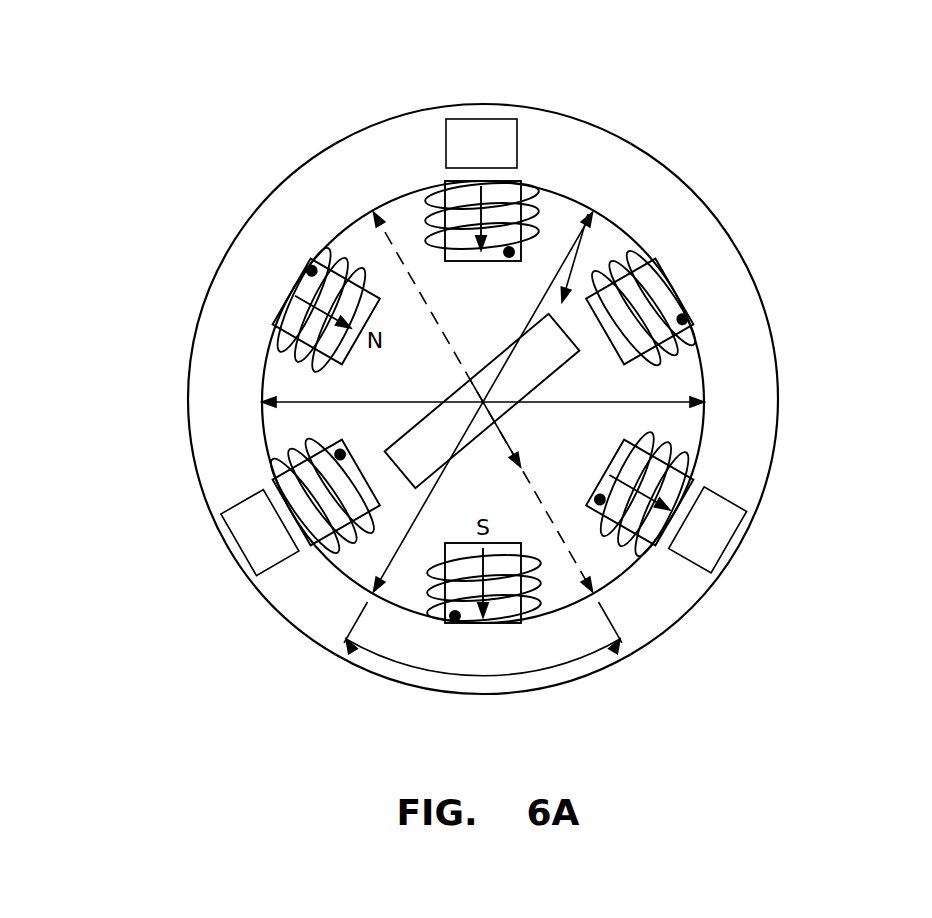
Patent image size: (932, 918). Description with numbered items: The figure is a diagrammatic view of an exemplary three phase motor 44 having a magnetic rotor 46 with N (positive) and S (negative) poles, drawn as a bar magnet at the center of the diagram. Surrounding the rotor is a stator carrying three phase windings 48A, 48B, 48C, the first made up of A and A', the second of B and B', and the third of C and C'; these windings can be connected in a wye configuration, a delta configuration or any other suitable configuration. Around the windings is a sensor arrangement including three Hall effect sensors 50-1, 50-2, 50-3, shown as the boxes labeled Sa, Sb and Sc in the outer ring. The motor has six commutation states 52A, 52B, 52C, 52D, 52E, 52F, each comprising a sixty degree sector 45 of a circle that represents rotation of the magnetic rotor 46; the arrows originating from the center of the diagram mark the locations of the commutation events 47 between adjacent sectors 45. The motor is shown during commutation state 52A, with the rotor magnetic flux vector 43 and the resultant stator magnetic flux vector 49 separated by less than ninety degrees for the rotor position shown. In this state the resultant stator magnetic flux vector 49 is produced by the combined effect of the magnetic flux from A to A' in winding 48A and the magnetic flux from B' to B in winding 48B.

The rotor magnetic flux vector 43 is at (362, 401).
The three phase motor 44 is at (769, 492).
The 60 degree sector 45 is at (398, 662).
The magnetic rotor 46 is at (578, 252).
The commutation event 47 is at (370, 557).
The phase winding A 48A is at (427, 207).
The phase winding B 48B is at (645, 540).
The phase winding C 48C is at (362, 458).
The resultant stator magnetic flux vector 49 is at (507, 437).
The Hall effect sensor 50-1 is at (512, 148).
The Hall effect sensor 50-2 is at (690, 555).
The Hall effect sensor 50-3 is at (243, 505).
The commutation state 52A is at (211, 527).
The commutation state 52B is at (470, 713).
The commutation state 52C is at (728, 532).
The commutation state 52D is at (716, 272).
The commutation state 52E is at (483, 72).
The commutation state 52F is at (207, 272).